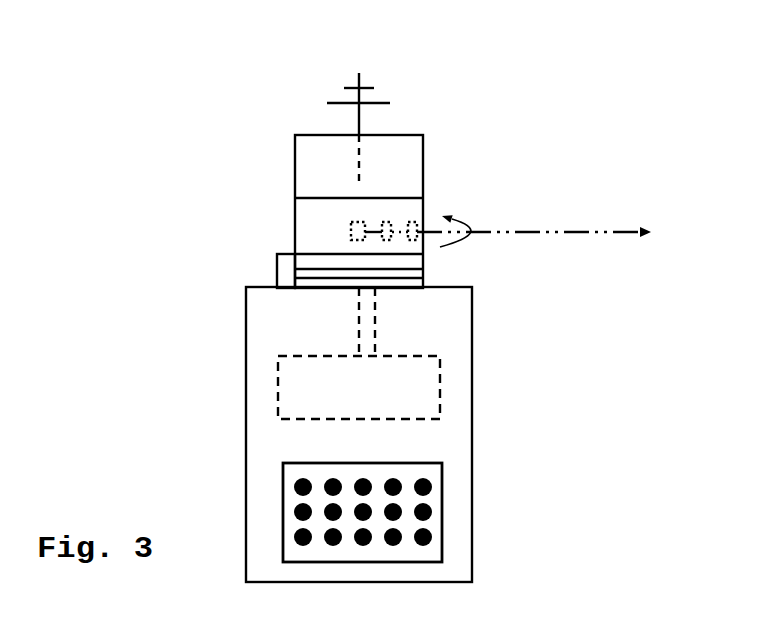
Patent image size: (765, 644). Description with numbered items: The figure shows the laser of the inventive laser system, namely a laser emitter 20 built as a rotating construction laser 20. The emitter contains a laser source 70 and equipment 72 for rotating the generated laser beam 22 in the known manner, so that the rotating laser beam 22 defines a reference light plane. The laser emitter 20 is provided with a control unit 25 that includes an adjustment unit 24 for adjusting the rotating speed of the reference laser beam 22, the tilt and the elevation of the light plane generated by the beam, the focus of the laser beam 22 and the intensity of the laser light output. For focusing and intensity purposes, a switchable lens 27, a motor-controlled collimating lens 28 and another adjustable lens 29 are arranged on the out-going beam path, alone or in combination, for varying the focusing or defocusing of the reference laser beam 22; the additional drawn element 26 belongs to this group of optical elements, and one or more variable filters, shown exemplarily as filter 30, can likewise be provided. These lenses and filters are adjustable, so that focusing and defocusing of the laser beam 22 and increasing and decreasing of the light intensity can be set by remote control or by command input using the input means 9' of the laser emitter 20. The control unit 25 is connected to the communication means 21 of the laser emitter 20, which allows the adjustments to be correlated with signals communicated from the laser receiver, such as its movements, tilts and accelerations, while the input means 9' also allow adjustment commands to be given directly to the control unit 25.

The laser emitter 20 is at (284, 145).
The communication means 21 is at (361, 86).
The laser beam 22 is at (535, 227).
The adjustment unit 24 is at (313, 270).
The control unit 25 is at (408, 388).
The optical element 26 is at (537, 167).
The switchable lens 27 is at (537, 167).
The motor-controlled collimating lens 28 is at (537, 167).
The adjustable lens 29 is at (411, 230).
The variable filter 30 is at (387, 228).
The laser source 70 is at (355, 222).
The equipment for rotating the laser beam 72 is at (307, 224).
The input means 9' is at (431, 498).